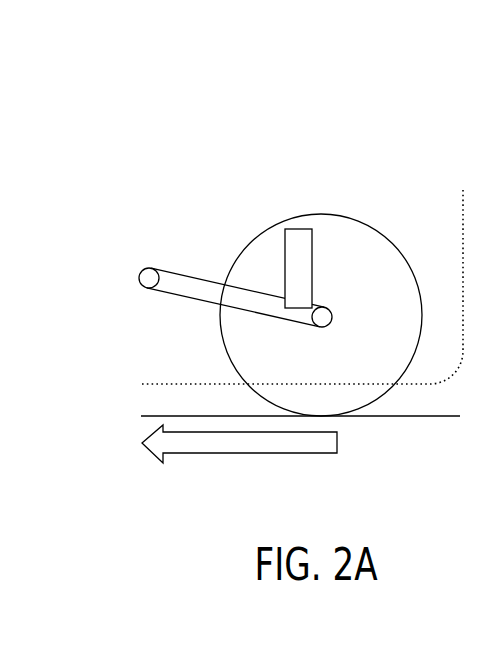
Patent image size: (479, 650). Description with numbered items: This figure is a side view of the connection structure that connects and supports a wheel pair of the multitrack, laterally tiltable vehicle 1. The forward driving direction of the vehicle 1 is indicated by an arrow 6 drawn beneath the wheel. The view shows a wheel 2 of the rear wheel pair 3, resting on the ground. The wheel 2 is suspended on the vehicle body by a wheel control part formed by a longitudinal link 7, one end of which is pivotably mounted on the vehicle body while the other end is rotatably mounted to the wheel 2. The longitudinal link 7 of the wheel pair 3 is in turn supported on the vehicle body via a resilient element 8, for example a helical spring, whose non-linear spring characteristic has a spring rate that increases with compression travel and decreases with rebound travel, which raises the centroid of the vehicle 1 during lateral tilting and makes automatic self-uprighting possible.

The vehicle 1 is at (174, 109).
The wheel 2 is at (355, 398).
The rear wheel pair 3 is at (397, 204).
The arrow 6 is at (230, 454).
The longitudinal link 7 is at (192, 287).
The resilient element 8 is at (298, 238).